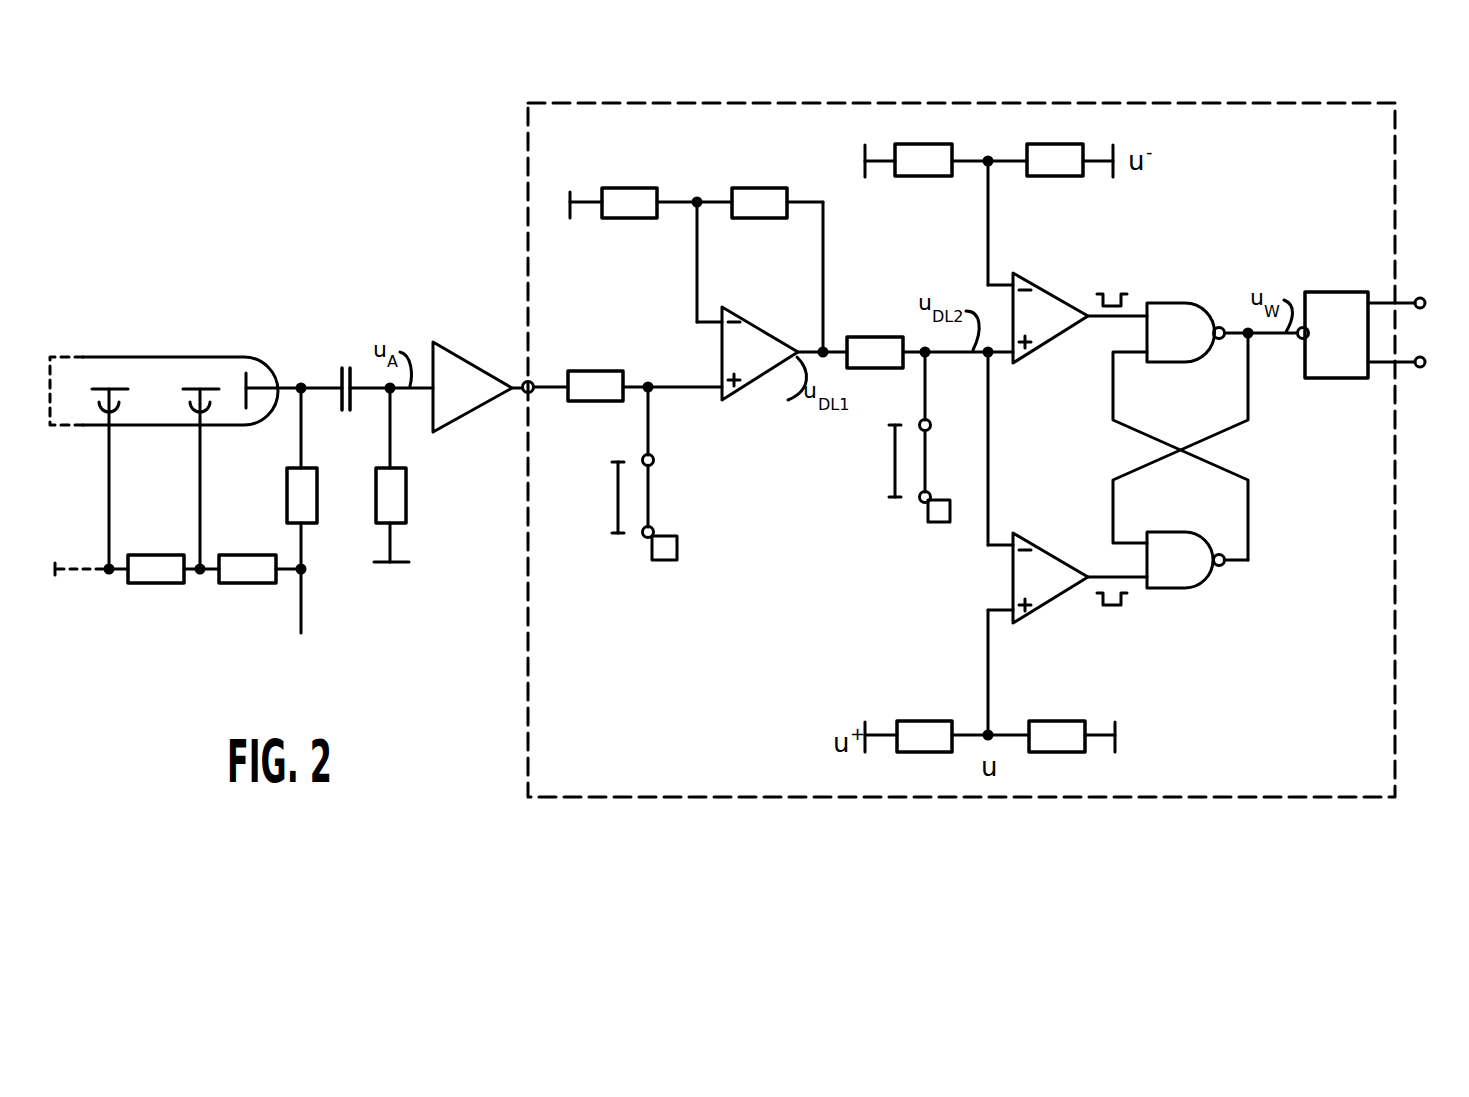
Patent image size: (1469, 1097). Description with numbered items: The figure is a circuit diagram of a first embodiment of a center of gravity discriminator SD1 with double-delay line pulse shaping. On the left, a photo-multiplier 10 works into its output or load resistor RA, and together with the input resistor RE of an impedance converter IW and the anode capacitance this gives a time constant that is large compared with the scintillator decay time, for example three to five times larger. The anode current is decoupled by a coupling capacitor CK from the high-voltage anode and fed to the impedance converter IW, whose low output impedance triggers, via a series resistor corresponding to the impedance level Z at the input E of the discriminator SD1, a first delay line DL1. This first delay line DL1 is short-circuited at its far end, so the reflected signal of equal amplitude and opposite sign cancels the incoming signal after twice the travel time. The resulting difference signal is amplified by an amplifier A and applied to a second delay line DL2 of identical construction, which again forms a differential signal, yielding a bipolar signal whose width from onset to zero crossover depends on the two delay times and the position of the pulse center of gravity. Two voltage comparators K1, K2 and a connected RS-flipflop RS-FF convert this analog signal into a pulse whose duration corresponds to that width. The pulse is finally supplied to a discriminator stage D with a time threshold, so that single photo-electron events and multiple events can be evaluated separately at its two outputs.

The photo-multiplier 10 is at (178, 352).
The output resistor RA is at (283, 508).
The coupling capacitor CK is at (367, 414).
The input resistor RE is at (408, 473).
The impedance converter IW is at (458, 420).
The input of discriminator E is at (532, 381).
The center of gravity discriminator SD1 is at (638, 805).
The impedance level Z is at (595, 402).
The first delay line DL1 is at (660, 473).
The amplifier A is at (696, 294).
The second delay line DL2 is at (937, 437).
The voltage comparator K1 is at (1050, 302).
The voltage comparator K2 is at (1050, 562).
The RS-flipflop RS-FF is at (1222, 445).
The discriminator stage D is at (1335, 378).